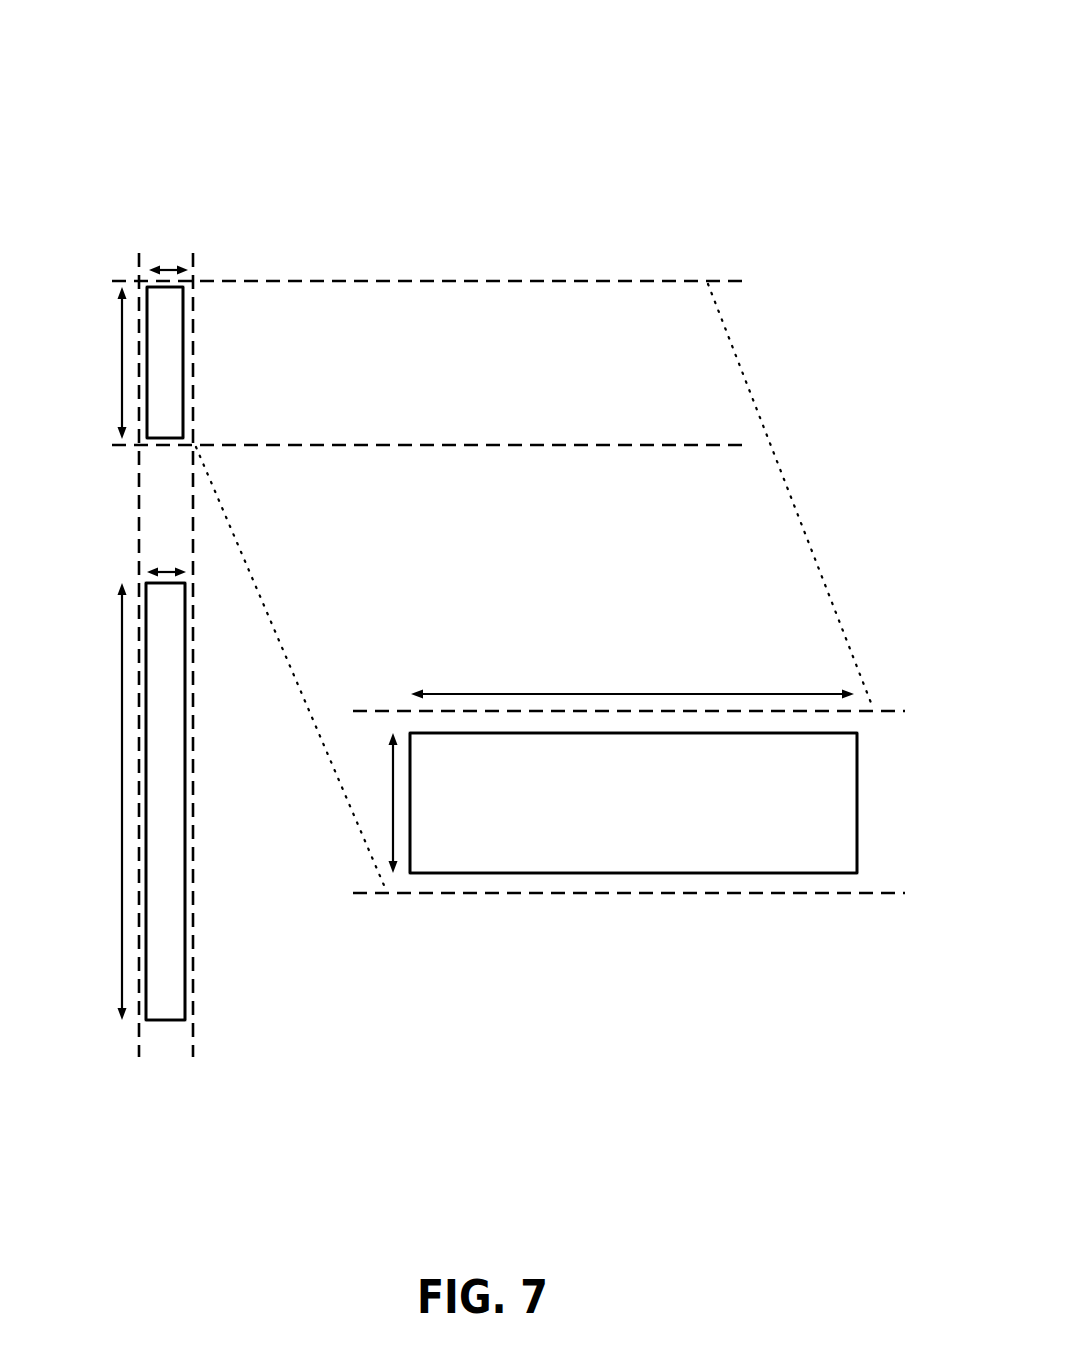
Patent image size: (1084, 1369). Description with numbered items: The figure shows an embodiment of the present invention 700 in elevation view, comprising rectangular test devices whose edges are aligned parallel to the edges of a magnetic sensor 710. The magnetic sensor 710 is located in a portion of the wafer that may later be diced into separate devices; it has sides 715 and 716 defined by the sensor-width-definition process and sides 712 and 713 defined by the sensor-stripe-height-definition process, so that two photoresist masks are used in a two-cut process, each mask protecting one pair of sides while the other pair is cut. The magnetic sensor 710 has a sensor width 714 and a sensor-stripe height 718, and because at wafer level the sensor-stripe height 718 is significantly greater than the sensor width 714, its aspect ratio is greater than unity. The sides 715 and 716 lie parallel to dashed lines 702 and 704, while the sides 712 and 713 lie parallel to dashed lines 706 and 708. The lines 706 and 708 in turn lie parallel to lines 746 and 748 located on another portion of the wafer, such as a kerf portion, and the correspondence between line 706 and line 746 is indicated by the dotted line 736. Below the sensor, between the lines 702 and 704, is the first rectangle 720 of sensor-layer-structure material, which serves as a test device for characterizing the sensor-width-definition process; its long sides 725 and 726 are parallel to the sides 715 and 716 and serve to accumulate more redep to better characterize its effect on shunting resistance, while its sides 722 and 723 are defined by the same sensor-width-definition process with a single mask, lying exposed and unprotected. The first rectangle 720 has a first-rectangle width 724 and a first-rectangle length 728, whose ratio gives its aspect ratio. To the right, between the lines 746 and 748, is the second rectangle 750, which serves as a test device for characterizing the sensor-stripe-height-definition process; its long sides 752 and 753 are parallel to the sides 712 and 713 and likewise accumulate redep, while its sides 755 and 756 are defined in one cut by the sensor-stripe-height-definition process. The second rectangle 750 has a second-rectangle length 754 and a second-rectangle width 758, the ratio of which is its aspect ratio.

The embodiment of the present invention 700 is at (268, 125).
The line 702 is at (194, 1057).
The line 704 is at (138, 1057).
The line 706 is at (500, 281).
The line 708 is at (500, 445).
The magnetic sensor 710 is at (176, 348).
The side 712 is at (181, 288).
The side 713 is at (167, 441).
The sensor width 714 is at (168, 264).
The side 715 is at (183, 393).
The side 716 is at (148, 363).
The sensor-stripe height 718 is at (120, 348).
The first rectangle 720 is at (187, 690).
The side 722 is at (184, 582).
The side 723 is at (172, 1022).
The first-rectangle width 724 is at (168, 568).
The long side 725 is at (185, 912).
The long side 726 is at (146, 818).
The first-rectangle length 728 is at (122, 717).
The line 736 is at (817, 560).
The line 746 is at (892, 710).
The line 748 is at (890, 892).
The second rectangle 750 is at (437, 733).
The long side 752 is at (673, 732).
The long side 753 is at (733, 875).
The second-rectangle length 754 is at (557, 693).
The side 755 is at (857, 827).
The side 756 is at (408, 847).
The second-rectangle width 758 is at (392, 802).